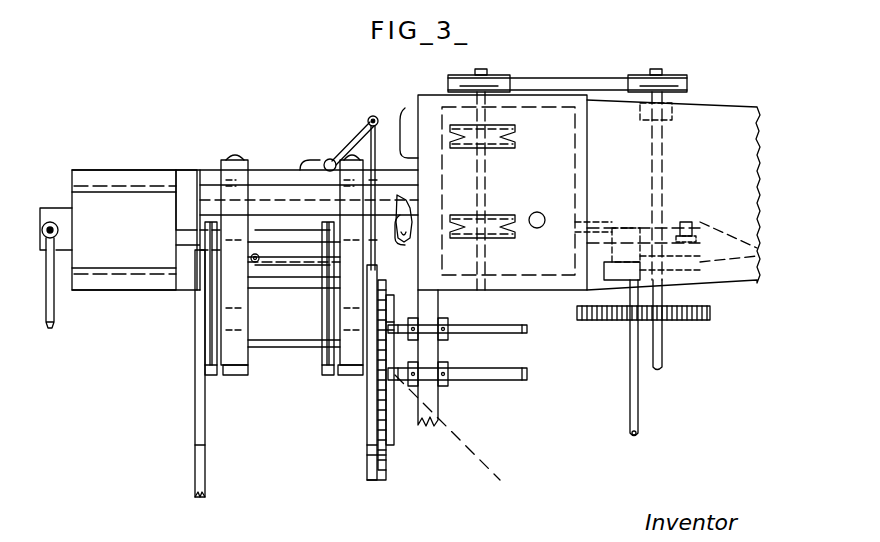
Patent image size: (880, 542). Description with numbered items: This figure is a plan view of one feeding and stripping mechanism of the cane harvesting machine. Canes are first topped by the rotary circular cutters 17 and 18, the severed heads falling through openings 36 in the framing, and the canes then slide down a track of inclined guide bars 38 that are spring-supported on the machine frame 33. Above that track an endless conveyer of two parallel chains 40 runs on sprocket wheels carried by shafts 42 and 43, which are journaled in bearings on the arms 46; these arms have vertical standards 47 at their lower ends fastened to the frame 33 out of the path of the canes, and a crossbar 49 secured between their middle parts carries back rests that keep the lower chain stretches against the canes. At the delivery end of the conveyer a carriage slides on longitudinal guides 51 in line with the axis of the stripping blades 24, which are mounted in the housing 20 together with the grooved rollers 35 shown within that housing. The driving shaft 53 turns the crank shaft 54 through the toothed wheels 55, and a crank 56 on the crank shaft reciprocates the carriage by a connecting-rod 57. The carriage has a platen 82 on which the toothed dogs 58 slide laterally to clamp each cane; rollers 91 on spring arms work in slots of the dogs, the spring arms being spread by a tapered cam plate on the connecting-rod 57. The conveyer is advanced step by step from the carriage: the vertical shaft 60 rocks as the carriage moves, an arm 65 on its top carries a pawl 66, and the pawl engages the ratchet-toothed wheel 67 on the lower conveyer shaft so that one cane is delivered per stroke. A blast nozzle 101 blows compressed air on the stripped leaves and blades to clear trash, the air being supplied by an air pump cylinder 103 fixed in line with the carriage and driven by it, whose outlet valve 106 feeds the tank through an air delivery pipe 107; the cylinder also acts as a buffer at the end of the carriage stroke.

The rotary circular cutter 17 is at (430, 300).
The rotary circular cutter 18 is at (380, 462).
The housing 20 is at (437, 110).
The stripping blade 24 is at (405, 108).
The machine frame 33 is at (718, 265).
The pulley 35 is at (518, 146).
The opening 36 is at (449, 342).
The inclined guide bar 38 is at (200, 427).
The endless chain 40 is at (245, 250).
The shaft 42 is at (288, 240).
The shaft 43 is at (312, 350).
The arm 46 is at (244, 372).
The vertical standard 47 is at (250, 180).
The crossbar 49 is at (298, 290).
The longitudinal guide 51 is at (107, 176).
The driving shaft 53 is at (664, 356).
The crank shaft 54 is at (640, 422).
The toothed wheel 55 is at (598, 324).
The crank 56 is at (758, 238).
The connecting-rod 57 is at (704, 227).
The toothed dog 58 is at (298, 215).
The vertical shaft 60 is at (331, 160).
The arm 65 is at (350, 148).
The pawl 66 is at (378, 190).
The ratchet-toothed wheel 67 is at (500, 480).
The platen 82 is at (263, 182).
The roller 91 is at (252, 260).
The blast nozzle 101 is at (402, 225).
The air pump cylinder 103 is at (60, 215).
The outlet valve 106 is at (55, 240).
The air delivery pipe 107 is at (56, 325).